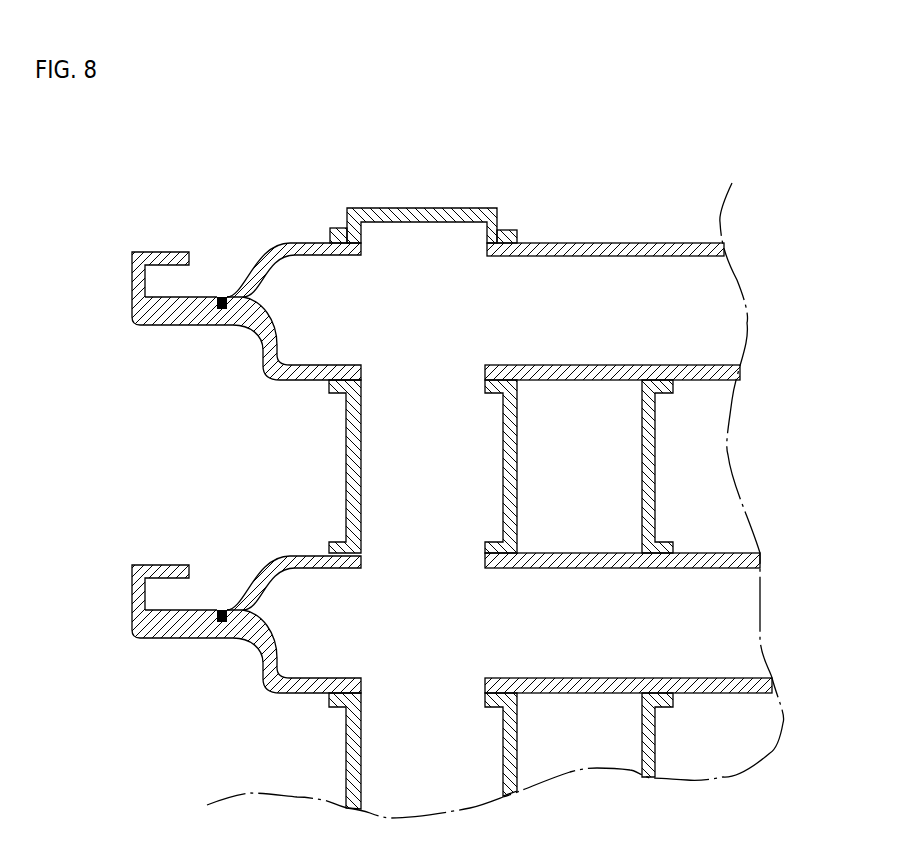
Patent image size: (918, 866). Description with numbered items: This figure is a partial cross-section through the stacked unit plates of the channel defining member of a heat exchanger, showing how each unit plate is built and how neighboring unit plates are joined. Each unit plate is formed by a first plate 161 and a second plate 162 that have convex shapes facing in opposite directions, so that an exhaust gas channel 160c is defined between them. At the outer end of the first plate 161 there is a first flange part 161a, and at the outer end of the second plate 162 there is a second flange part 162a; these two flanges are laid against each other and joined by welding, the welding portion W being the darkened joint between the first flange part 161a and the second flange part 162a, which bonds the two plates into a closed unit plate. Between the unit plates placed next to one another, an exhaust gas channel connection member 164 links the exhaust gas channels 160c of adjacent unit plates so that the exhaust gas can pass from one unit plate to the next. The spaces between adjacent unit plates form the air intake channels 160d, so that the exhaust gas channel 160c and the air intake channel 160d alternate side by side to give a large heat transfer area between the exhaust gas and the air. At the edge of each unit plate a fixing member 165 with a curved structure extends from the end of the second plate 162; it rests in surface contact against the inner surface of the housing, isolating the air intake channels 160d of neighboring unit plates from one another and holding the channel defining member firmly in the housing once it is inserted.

The fixing member 165 is at (140, 282).
The second flange part 162a is at (205, 327).
The second plate 162 is at (283, 379).
The first plate 161 is at (310, 243).
The welding portion W is at (222, 297).
The first flange part 161a is at (230, 297).
The exhaust gas channel 160c is at (402, 318).
The exhaust gas channel connection member 164 is at (353, 492).
The air intake channel 160d is at (573, 723).